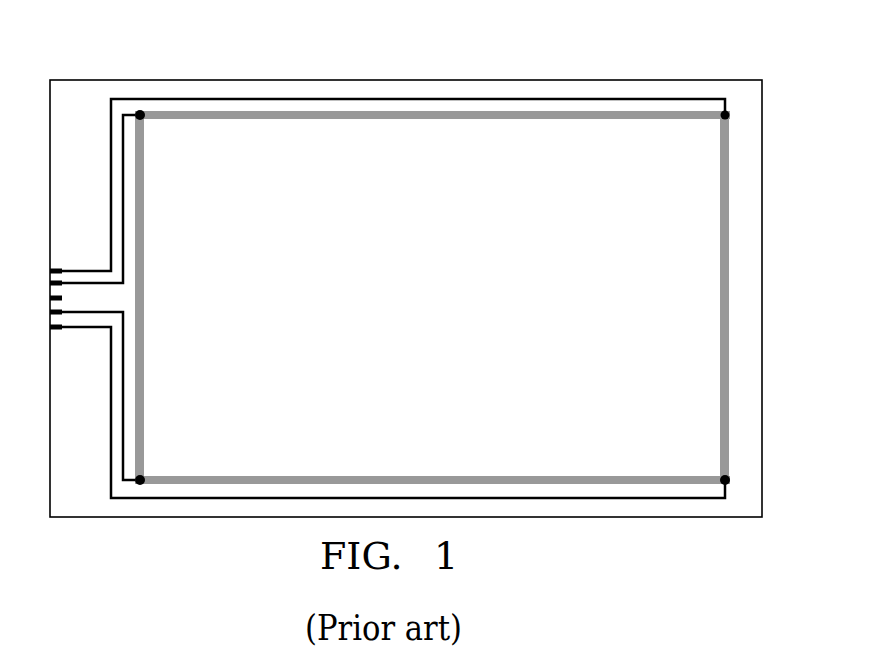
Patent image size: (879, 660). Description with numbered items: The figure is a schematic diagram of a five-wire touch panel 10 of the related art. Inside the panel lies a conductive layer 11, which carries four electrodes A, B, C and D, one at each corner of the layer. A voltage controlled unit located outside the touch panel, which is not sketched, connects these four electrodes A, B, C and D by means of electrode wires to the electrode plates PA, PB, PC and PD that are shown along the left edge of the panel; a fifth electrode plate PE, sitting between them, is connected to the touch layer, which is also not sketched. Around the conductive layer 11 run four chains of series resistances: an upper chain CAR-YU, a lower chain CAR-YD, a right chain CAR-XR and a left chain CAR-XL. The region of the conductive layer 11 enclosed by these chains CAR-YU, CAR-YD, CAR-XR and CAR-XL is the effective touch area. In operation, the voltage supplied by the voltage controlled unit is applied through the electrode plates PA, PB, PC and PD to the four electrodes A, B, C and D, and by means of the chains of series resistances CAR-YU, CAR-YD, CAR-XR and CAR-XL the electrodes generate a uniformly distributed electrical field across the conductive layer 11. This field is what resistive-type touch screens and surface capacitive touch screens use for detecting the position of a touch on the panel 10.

The five-wire touch panel 10 is at (561, 77).
The conductive layer 11 is at (323, 80).
The electrode plate PA is at (371, 188).
The electrode plate PB is at (371, 409).
The electrode plate PC is at (78, 393).
The electrode plate PD is at (78, 203).
The electrode plate PE is at (39, 299).
The electrode A is at (736, 115).
The electrode B is at (735, 480).
The electrode C is at (150, 470).
The electrode D is at (150, 124).
The chain of series resistances CAR-YU is at (435, 118).
The chain of series resistances CAR-YD is at (462, 478).
The chain of series resistances CAR-XL is at (145, 262).
The chain of series resistances CAR-XR is at (723, 272).